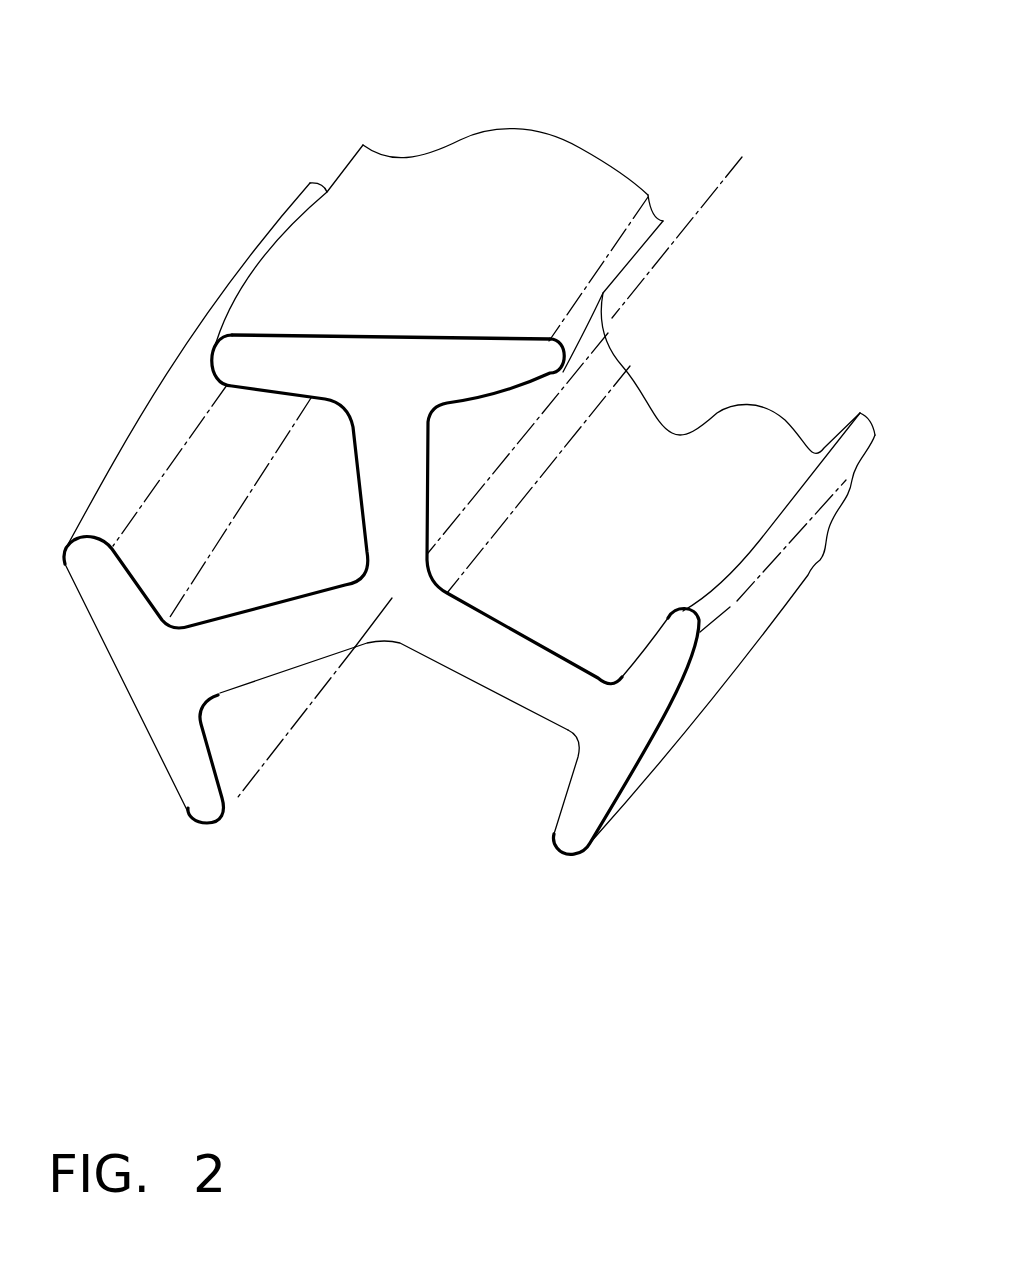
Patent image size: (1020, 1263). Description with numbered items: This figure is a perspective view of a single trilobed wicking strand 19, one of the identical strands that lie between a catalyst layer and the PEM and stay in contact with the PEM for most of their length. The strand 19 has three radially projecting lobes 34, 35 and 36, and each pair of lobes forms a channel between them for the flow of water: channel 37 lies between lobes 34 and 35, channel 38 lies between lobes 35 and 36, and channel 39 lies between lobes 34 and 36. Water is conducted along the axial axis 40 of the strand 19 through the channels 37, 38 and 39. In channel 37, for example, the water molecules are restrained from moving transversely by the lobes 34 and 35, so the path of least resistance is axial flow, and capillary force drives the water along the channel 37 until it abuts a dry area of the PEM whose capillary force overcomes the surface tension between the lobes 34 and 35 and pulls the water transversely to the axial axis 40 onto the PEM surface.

The wicking strand 19 is at (714, 51).
The lobe 34 is at (432, 253).
The lobe 35 is at (563, 851).
The lobe 36 is at (190, 818).
The channel 37 is at (553, 507).
The channel 38 is at (392, 730).
The channel 39 is at (293, 527).
The axial axis 40 is at (653, 268).